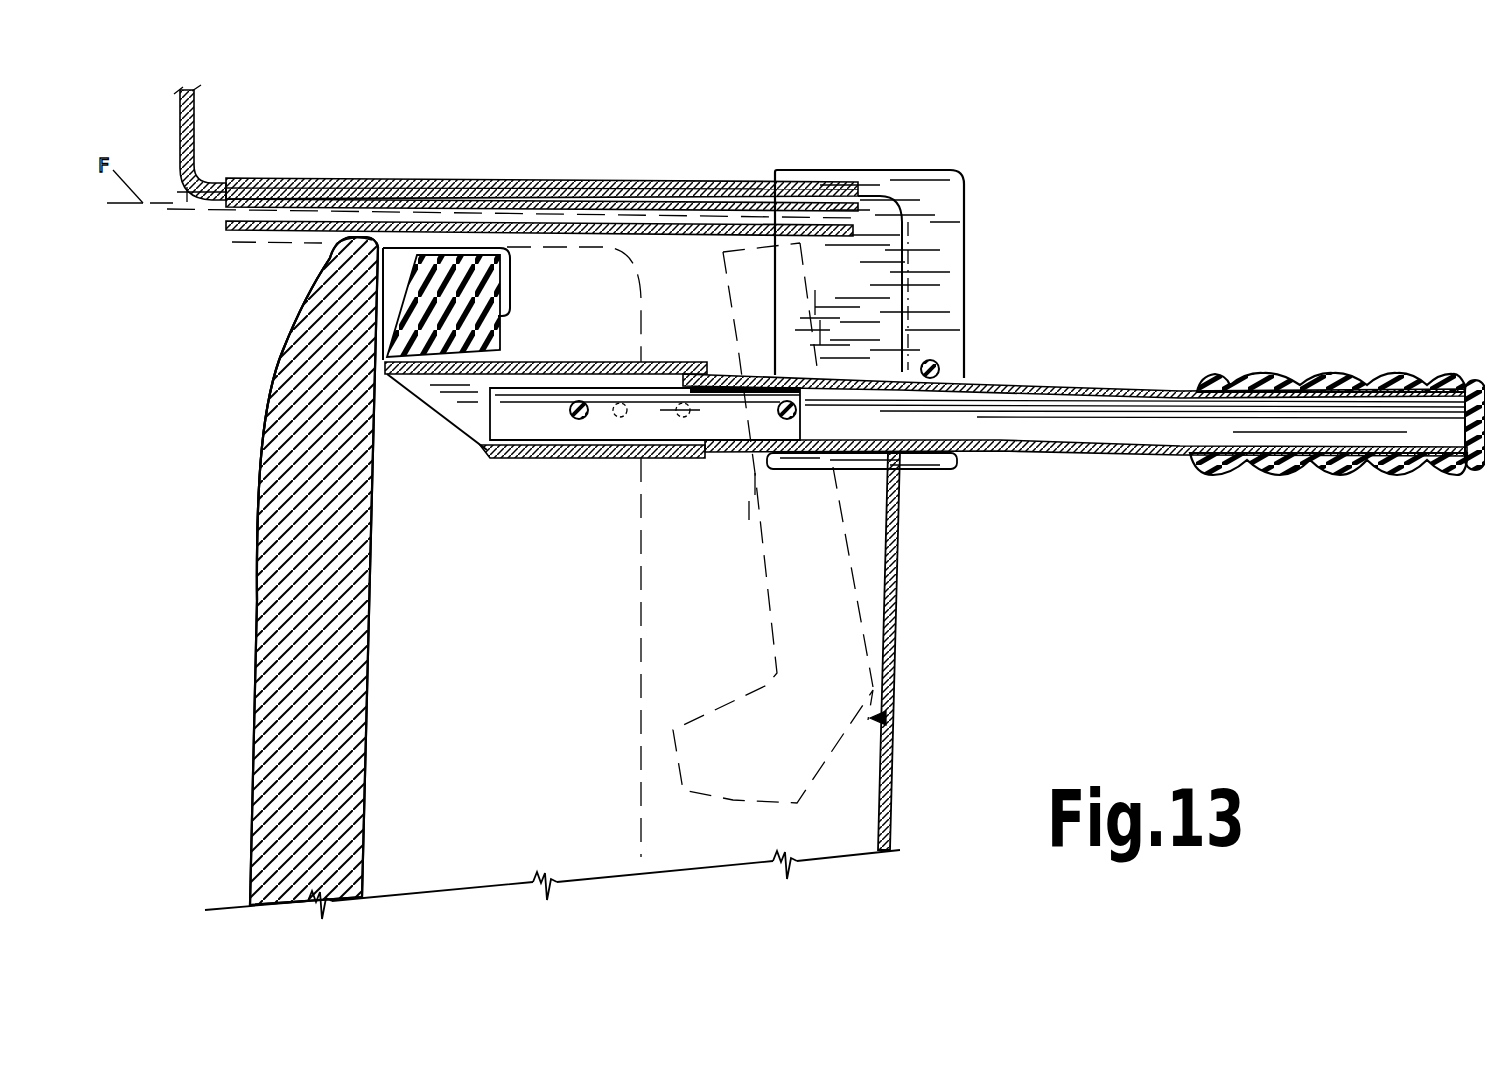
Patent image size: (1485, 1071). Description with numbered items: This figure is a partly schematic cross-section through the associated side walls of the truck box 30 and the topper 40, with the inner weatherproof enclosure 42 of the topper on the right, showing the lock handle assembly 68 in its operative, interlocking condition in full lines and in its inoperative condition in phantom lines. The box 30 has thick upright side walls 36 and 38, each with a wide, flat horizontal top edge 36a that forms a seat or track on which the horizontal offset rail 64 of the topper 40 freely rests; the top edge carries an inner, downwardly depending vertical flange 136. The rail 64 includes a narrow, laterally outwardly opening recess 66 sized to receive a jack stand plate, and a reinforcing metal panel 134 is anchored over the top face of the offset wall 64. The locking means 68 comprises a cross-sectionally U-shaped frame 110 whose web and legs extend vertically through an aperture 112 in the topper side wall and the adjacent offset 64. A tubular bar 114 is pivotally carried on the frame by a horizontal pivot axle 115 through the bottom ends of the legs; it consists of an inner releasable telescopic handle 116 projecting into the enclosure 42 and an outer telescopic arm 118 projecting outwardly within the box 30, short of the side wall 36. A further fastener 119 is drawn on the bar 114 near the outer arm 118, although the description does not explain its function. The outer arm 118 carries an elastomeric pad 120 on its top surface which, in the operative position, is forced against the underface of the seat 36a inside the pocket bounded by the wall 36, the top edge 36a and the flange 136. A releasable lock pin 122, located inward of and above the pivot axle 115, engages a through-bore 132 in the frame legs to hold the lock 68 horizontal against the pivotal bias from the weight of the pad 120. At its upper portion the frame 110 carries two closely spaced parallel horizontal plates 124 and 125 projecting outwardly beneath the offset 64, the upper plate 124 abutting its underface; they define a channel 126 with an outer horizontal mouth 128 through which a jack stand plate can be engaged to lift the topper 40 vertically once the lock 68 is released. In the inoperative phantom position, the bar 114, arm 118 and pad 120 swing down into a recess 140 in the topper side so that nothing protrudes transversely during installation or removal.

The box 30 is at (281, 374).
The box side wall 36 is at (283, 478).
The box side wall 38 is at (314, 571).
The top edge 36a is at (343, 243).
The topper 40 is at (180, 118).
The inner weatherproof enclosure 42 is at (1086, 550).
The horizontal underface (offset rail) 64 is at (347, 181).
The recess 66 is at (707, 519).
The lock handle assembly (locking means) 68 is at (1022, 456).
The U-shape frame 110 is at (962, 200).
The aperture 112 is at (704, 194).
The tubular bar 114 is at (720, 452).
The pivot axle 115 is at (778, 415).
The telescopic handle 116 is at (1100, 390).
The outer telescopic arm 118 is at (528, 459).
The screw 119 is at (569, 410).
The elastomeric pad 120 is at (504, 331).
The lock pin 122 is at (942, 368).
The upper jack plate 124 is at (212, 195).
The lower jack plate 125 is at (222, 236).
The channel 126 is at (483, 214).
The outer horizontal mouth 128 is at (225, 211).
The through-bore 132 is at (936, 362).
The reinforcing metal panel 134 is at (586, 187).
The vertical flange 136 is at (512, 292).
The recess 140 is at (701, 657).